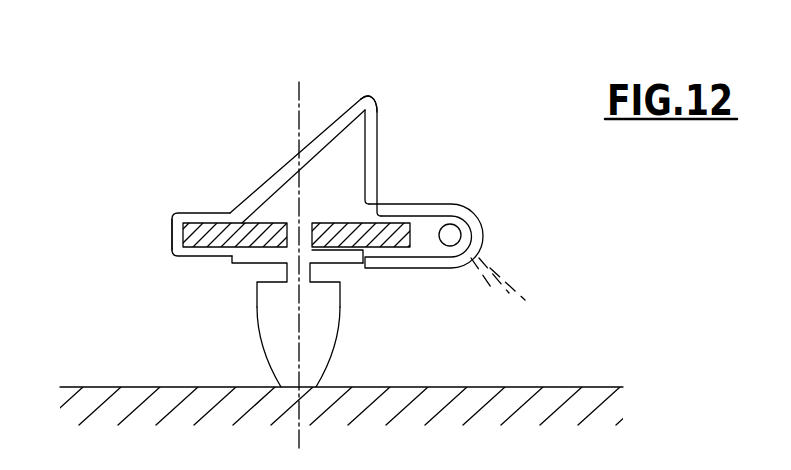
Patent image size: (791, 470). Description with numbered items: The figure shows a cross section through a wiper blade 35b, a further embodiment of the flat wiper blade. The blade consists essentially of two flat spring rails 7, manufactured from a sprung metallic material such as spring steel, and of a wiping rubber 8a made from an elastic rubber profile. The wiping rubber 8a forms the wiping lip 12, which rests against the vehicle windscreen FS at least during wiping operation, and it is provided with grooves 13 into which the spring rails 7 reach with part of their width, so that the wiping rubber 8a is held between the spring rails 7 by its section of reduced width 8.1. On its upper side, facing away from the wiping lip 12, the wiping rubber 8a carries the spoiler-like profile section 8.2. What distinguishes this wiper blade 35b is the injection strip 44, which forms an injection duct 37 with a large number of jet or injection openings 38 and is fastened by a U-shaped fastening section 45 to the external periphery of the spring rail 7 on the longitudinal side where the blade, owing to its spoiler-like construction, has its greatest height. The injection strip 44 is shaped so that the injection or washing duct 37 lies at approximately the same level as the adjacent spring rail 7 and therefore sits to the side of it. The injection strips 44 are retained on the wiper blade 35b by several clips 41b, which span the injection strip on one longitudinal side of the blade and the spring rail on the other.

The spring rail 7 is at (192, 227).
The section of reduced width 8.1 is at (303, 208).
The spoiler-like profile section 8.2 is at (377, 140).
The wiping rubber 8a is at (250, 313).
The wiping lip 12 is at (313, 364).
The groove 13 is at (268, 223).
The wiper blade 35b is at (166, 232).
The injection duct 37 is at (453, 230).
The jet or injection openings 38 is at (466, 258).
The clip 41b is at (320, 133).
The injection strip 44 is at (428, 257).
The U-shaped fastening section 45 is at (397, 250).
The vehicle windscreen FS is at (560, 387).